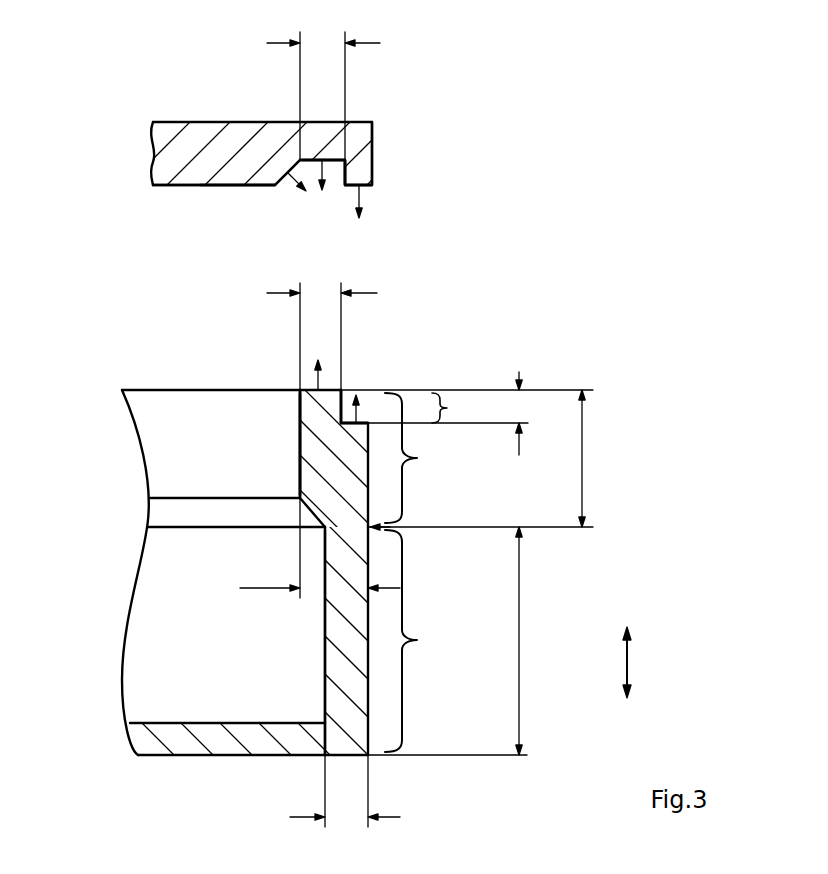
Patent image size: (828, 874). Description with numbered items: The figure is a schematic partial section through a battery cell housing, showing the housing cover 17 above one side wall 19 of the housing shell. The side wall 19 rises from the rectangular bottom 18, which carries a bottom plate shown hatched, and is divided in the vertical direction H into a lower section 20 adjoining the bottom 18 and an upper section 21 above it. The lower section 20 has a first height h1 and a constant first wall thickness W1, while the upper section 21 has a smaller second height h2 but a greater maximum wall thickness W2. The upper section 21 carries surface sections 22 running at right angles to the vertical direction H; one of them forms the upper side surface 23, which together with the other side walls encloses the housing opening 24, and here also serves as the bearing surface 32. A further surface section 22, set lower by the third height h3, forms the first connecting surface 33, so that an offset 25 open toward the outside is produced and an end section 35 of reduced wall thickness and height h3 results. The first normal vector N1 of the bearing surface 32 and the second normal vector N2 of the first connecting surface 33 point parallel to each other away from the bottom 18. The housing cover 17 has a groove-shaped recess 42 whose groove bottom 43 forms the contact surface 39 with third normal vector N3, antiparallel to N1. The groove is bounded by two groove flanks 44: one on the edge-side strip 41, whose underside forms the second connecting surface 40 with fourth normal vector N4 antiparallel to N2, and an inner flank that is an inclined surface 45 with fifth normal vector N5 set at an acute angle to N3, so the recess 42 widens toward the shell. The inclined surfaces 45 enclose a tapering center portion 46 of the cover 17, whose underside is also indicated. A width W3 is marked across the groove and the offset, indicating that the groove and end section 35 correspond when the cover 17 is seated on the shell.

The housing cover 17 is at (163, 153).
The bottom 18 is at (180, 738).
The side wall 19 is at (325, 668).
The lower section 20 is at (400, 535).
The upper section 21 is at (400, 479).
The surface section 22 is at (289, 384).
The upper side surface 23 is at (217, 410).
The housing opening 24 is at (143, 388).
The offset 25 is at (342, 396).
The bearing surface 32 is at (217, 409).
The first connecting surface 33 is at (376, 416).
The end section 35 is at (448, 407).
The contact surface 39 is at (336, 172).
The second connecting surface 40 is at (382, 191).
The edge-side strip 41 is at (371, 166).
The groove-shaped recess 42 is at (291, 155).
The groove bottom 43 is at (308, 203).
The groove flank 44 is at (355, 161).
The inclined surface 45 is at (264, 172).
The center portion 46 is at (178, 186).
The first normal vector N1 is at (300, 388).
The second normal vector N2 is at (358, 402).
The third normal vector N3 is at (350, 158).
The fourth normal vector N4 is at (361, 202).
The fifth normal vector N5 is at (304, 189).
The vertical direction H is at (628, 667).
The first wall thickness W1 is at (360, 791).
The second wall thickness W2 is at (318, 573).
The width W3 is at (323, 304).
The first height h1 is at (447, 641).
The second height h2 is at (480, 460).
The third height h3 is at (467, 413).